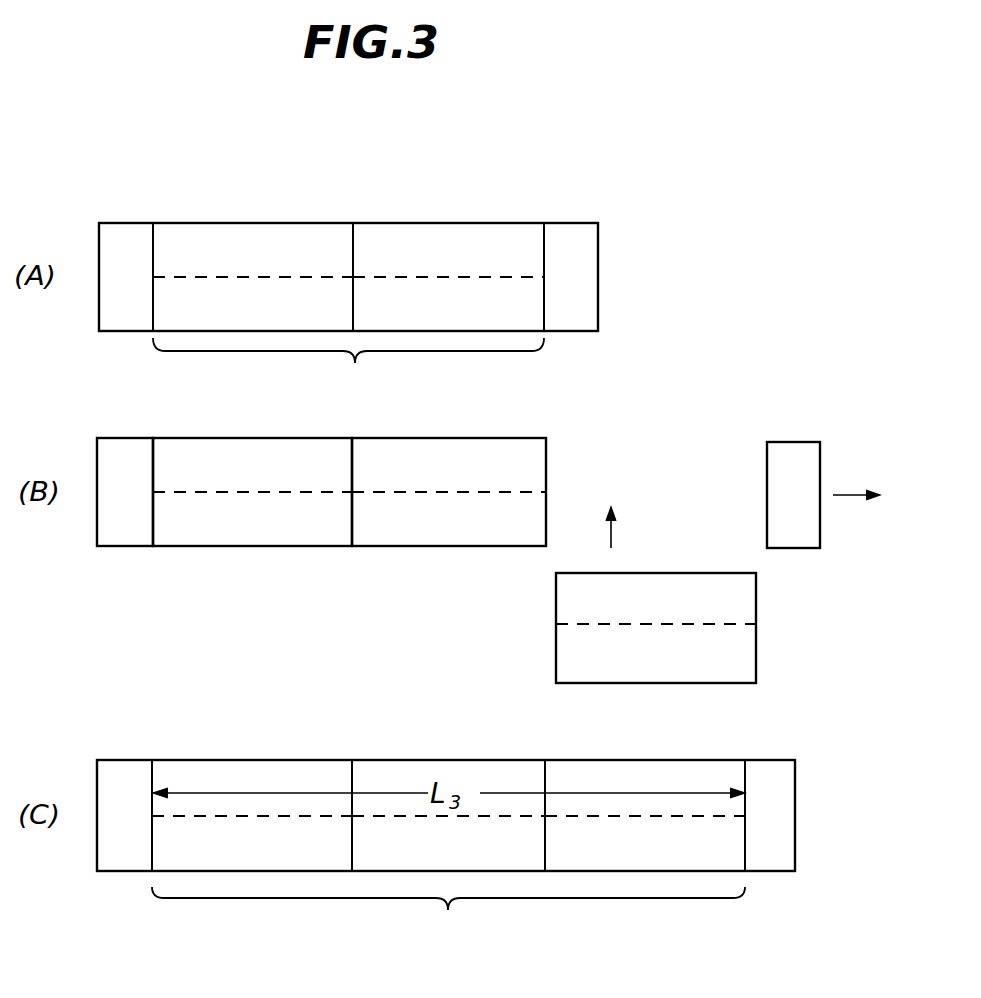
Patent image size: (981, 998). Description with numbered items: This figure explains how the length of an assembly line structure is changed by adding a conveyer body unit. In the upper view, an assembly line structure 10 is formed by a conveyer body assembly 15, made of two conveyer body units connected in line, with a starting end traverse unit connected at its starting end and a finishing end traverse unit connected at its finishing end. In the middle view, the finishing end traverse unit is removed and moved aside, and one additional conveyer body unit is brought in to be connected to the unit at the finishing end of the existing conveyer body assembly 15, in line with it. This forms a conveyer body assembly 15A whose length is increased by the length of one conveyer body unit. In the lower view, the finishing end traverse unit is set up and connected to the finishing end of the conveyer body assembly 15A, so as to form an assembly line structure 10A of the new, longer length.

The assembly line structure 10 is at (572, 153).
The assembly line structure 10A is at (752, 725).
The conveyer body assembly 15 is at (348, 370).
The conveyer body assembly 15A is at (448, 921).